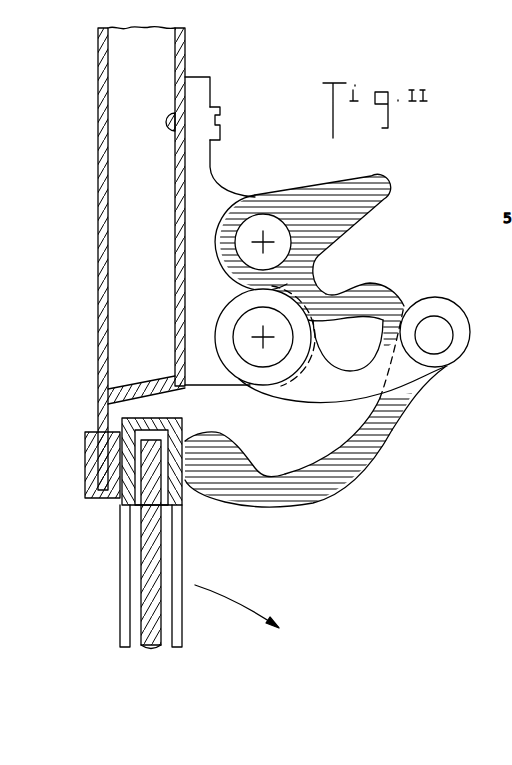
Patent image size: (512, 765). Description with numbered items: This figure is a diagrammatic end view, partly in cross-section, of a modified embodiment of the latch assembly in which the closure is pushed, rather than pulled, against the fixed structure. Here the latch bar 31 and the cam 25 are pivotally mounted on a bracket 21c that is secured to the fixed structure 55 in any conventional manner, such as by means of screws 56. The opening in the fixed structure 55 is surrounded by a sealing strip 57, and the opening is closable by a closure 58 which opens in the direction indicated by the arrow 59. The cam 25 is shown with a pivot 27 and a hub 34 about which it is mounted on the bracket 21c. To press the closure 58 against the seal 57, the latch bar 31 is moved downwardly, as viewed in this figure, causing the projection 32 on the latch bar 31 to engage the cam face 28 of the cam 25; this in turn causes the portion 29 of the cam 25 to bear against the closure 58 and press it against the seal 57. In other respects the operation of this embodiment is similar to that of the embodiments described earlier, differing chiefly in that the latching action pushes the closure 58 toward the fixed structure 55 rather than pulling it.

The bracket 21c is at (205, 172).
The cam 25 is at (378, 284).
The pivot pin 27 is at (258, 240).
The cam face 28 is at (400, 441).
The portion of the cam 29 is at (230, 449).
The latch bar 31 is at (462, 311).
The projection 32 is at (452, 341).
The hub 34 is at (267, 342).
The fixed structure 55 is at (98, 290).
The screws 56 is at (222, 133).
The sealing strip 57 is at (85, 473).
The closure 58 is at (175, 545).
The arrow 59 is at (237, 606).